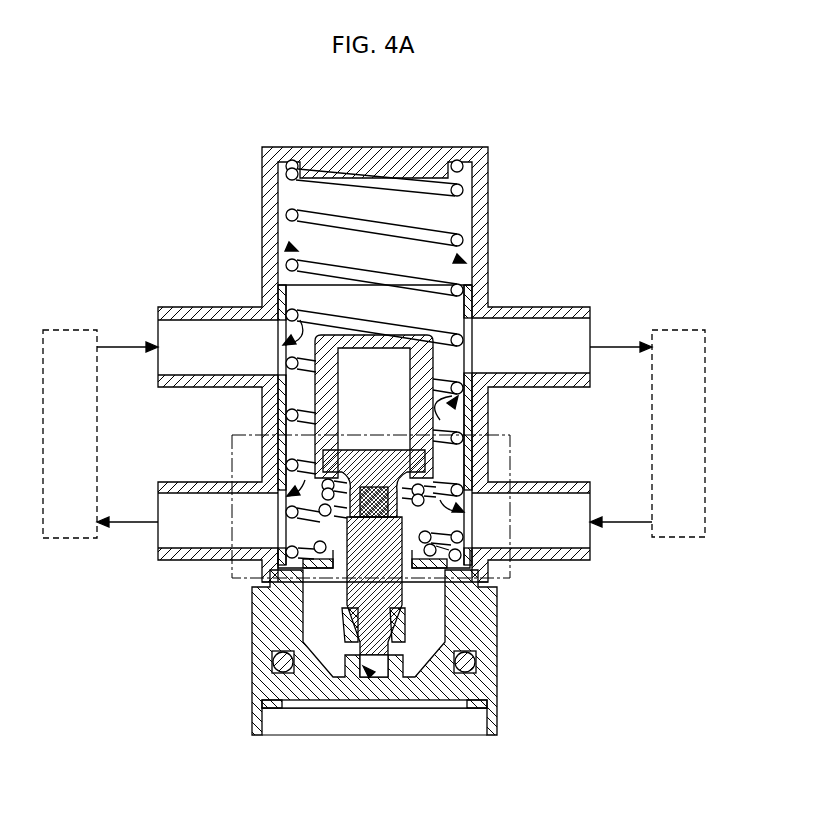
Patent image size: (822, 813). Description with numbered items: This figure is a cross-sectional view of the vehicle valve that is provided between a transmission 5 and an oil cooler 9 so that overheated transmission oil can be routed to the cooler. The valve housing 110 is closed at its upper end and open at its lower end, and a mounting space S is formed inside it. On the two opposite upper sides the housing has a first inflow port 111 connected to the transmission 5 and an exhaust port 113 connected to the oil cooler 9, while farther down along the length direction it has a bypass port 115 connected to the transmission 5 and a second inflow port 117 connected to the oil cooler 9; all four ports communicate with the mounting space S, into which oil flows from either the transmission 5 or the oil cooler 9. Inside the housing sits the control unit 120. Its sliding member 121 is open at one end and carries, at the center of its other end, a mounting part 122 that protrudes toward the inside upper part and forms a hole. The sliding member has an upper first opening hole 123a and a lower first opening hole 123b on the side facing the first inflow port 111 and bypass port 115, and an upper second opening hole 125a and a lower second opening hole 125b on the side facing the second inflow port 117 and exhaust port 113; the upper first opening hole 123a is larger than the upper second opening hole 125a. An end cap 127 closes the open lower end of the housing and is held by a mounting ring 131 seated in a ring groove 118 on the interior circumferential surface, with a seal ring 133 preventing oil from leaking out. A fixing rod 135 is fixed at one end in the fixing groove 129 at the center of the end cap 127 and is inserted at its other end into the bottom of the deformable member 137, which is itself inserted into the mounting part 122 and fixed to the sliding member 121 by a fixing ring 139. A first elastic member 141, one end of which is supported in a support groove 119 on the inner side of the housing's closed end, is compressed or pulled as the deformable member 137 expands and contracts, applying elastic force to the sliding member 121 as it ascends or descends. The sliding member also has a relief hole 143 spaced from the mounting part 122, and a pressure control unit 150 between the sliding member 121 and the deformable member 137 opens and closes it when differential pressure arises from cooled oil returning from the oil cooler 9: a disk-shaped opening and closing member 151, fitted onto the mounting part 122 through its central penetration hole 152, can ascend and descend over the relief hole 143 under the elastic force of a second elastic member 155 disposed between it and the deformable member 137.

The transmission 5 is at (50, 330).
The oil cooler 9 is at (681, 330).
The valve housing 110 is at (488, 148).
The first inflow port 111 is at (158, 308).
The exhaust port 113 is at (582, 307).
The bypass port 115 is at (158, 560).
The second inflow port 117 is at (590, 553).
The ring groove 118 is at (498, 711).
The support groove 119 is at (413, 177).
The control unit 120 is at (295, 250).
The sliding member 121 is at (485, 292).
The mounting part 122 is at (268, 563).
The first opening hole 123a is at (284, 297).
The first opening hole 123b is at (265, 467).
The second opening hole 125a is at (472, 428).
The second opening hole 125b is at (445, 473).
The end cap 127 is at (318, 690).
The fixing groove 129 is at (380, 693).
The mounting ring 131 is at (280, 708).
The seal ring 133 is at (474, 667).
The fixing rod 135 is at (397, 683).
The deformable member 137 is at (272, 395).
The fixing ring 139 is at (265, 471).
The first elastic member 141 is at (287, 212).
The relief hole 143 is at (435, 582).
The pressure control unit 150 is at (583, 582).
The opening and closing member 151 is at (445, 597).
The penetration hole 152 is at (345, 565).
The second elastic member 155 is at (490, 580).
The mounting space S is at (462, 262).